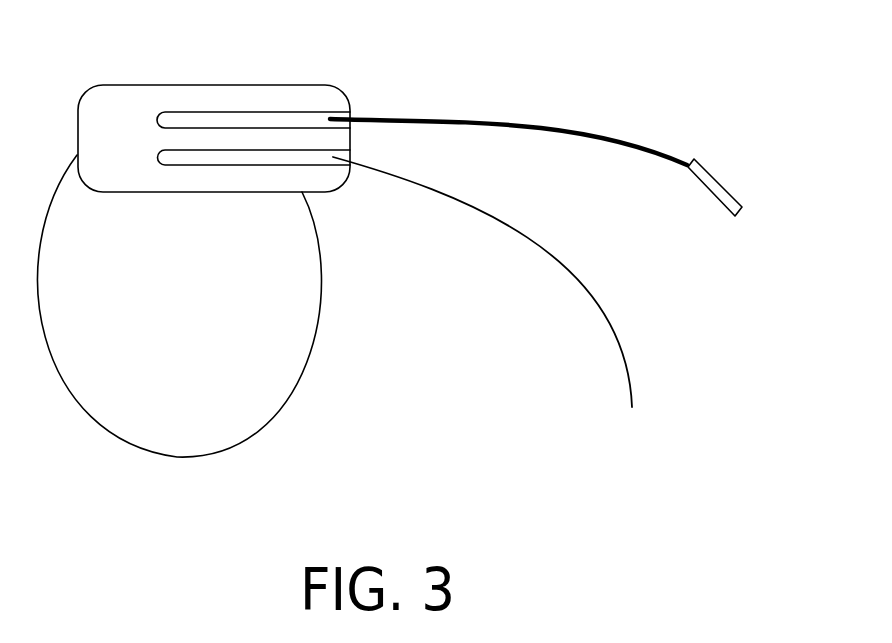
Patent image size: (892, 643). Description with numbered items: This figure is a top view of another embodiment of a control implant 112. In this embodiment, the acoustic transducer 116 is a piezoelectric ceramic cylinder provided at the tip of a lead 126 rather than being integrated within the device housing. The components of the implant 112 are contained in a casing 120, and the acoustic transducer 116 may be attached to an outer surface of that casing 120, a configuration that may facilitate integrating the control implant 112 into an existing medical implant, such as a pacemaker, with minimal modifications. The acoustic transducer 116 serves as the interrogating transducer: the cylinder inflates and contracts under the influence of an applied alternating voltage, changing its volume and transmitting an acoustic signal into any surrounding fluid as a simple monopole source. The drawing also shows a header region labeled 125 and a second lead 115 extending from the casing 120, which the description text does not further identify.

The control implant 112 is at (310, 382).
The casing 120 is at (295, 218).
The connector bores 125 is at (288, 110).
The lead 126 is at (560, 125).
The acoustic transducer 116 is at (708, 177).
The lead 115 is at (578, 278).